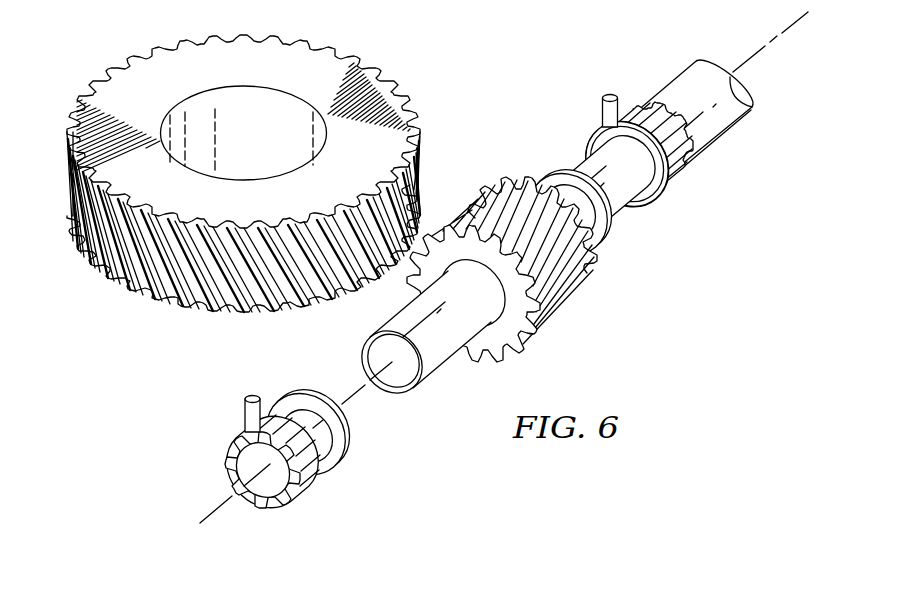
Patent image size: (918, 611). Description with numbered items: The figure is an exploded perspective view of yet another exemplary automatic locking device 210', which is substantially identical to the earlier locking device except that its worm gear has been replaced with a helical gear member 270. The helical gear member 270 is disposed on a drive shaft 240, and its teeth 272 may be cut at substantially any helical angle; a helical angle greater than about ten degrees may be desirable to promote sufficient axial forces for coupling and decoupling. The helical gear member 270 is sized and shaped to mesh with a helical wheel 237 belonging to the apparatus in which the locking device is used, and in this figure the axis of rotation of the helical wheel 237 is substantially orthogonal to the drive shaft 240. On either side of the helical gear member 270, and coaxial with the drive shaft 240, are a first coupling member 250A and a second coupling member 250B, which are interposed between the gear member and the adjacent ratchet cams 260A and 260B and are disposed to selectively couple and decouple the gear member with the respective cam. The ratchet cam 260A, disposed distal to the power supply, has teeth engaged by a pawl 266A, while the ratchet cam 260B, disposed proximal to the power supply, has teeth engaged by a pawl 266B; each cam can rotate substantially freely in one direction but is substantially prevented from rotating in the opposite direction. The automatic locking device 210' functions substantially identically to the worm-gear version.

The helical wheel 237 is at (128, 88).
The automatic locking device 210' is at (484, 290).
The drive shaft 240 is at (672, 82).
The pawl 266B is at (603, 117).
The ratchet cam 260B is at (693, 148).
The second coupling member 250B is at (611, 237).
The teeth 272 is at (553, 327).
The helical gear member 270 is at (487, 353).
The pawl 266A is at (247, 414).
The first coupling member 250A is at (332, 472).
The ratchet cam 260A is at (248, 502).